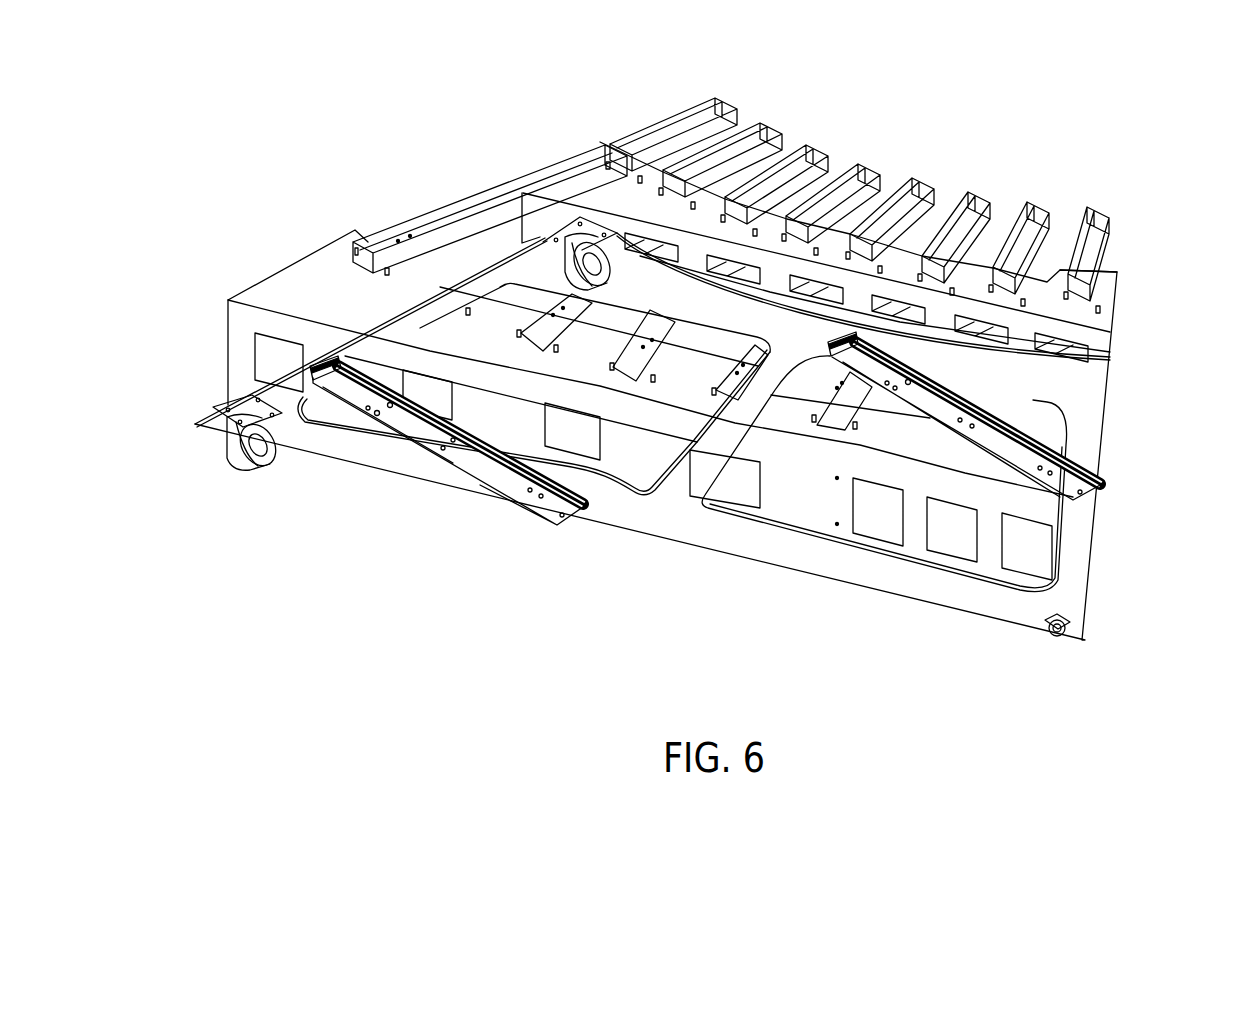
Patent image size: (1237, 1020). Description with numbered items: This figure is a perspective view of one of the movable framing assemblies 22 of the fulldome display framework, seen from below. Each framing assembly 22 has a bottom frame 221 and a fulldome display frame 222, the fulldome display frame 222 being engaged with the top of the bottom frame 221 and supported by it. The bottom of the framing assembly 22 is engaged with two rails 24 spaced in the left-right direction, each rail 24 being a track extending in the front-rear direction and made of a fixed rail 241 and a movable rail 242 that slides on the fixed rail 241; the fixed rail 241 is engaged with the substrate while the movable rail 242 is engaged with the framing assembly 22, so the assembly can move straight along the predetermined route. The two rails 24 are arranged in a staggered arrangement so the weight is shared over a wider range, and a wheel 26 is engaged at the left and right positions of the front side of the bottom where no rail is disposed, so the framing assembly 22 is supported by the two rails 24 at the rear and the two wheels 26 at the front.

The framing assembly 22 is at (274, 256).
The bottom frame 221 is at (363, 452).
The fulldome display frame 222 is at (457, 203).
The rail 24 is at (472, 495).
The fixed rail 241 is at (1050, 475).
The movable rail 242 is at (1078, 418).
The wheel 26 is at (240, 482).